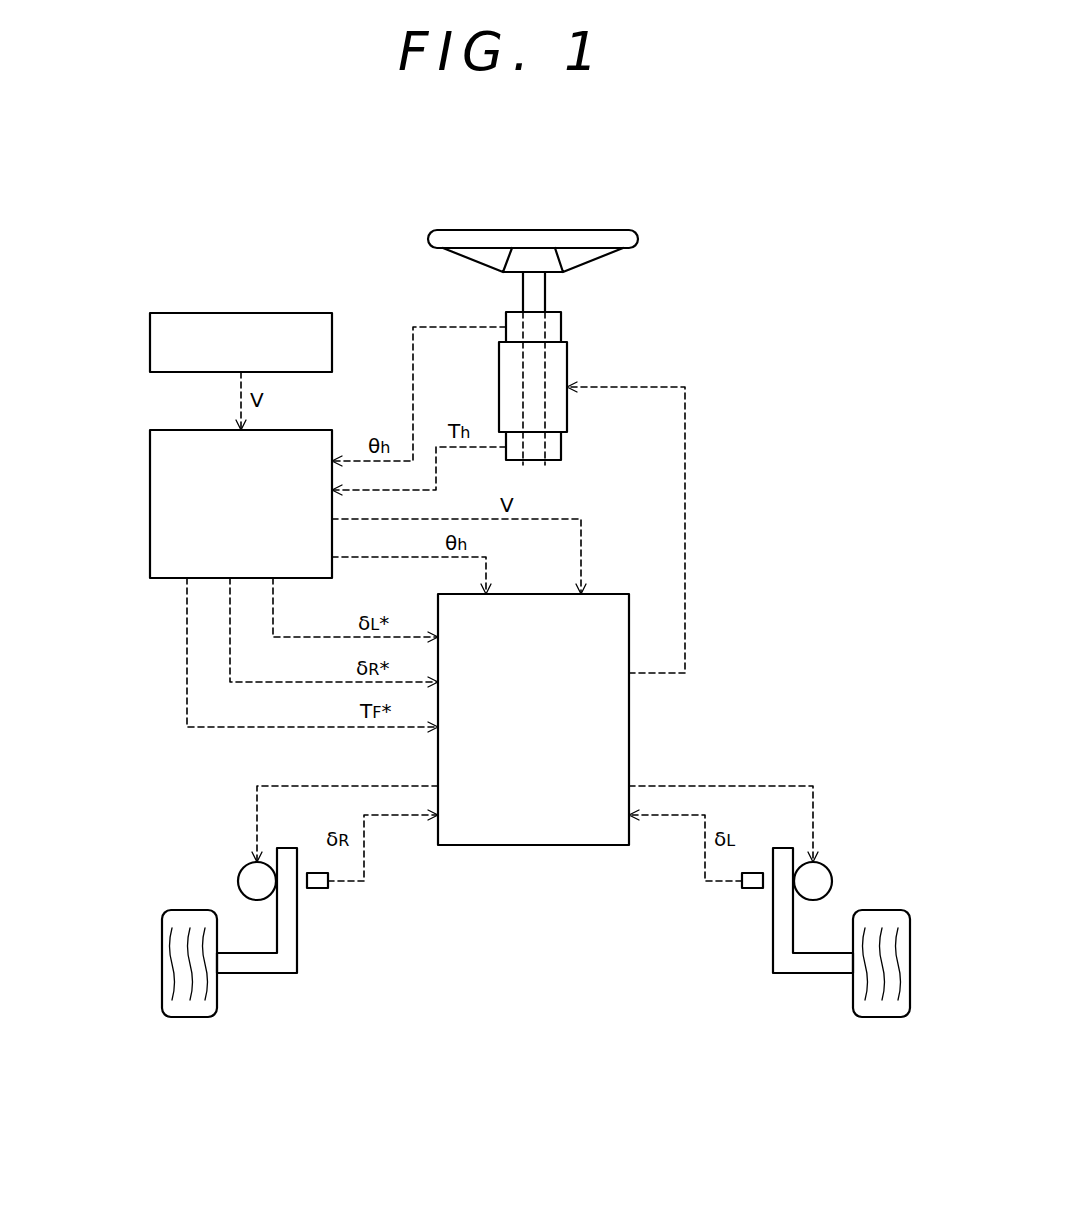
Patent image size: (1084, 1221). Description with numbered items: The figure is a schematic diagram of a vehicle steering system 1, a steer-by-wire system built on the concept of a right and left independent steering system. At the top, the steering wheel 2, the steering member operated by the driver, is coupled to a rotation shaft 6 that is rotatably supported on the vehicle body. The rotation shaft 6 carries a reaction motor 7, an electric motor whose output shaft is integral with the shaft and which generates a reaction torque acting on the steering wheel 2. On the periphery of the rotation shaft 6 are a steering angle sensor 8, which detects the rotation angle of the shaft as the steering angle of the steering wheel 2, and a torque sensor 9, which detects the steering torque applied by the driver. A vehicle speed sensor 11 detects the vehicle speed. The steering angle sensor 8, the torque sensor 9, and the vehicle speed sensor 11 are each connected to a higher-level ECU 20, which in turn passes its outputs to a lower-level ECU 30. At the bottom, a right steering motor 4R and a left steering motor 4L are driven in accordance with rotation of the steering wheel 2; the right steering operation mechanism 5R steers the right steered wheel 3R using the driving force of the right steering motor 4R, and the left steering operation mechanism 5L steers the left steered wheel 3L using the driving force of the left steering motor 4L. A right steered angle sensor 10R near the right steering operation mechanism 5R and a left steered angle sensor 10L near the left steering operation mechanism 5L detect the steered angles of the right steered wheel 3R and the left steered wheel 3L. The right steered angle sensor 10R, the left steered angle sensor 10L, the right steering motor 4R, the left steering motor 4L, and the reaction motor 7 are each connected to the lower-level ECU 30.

The vehicle steering system 1 is at (750, 240).
The steering wheel 2 is at (638, 238).
The rotation shaft 6 is at (540, 296).
The steering angle sensor 8 is at (556, 328).
The reaction motor 7 is at (562, 365).
The torque sensor 9 is at (556, 448).
The vehicle speed sensor 11 is at (150, 342).
The higher-level electronic control unit (ECU) 20 is at (150, 503).
The lower-level electronic control unit (ECU) 30 is at (612, 594).
The right steering motor 4R is at (238, 880).
The left steering motor 4L is at (832, 880).
The right steering operation mechanism 5R is at (265, 973).
The left steering operation mechanism 5L is at (815, 973).
The right steered wheel 3R is at (188, 1017).
The left steered wheel 3L is at (882, 1017).
The right steered angle sensor 10R is at (318, 888).
The left steered angle sensor 10L is at (751, 888).